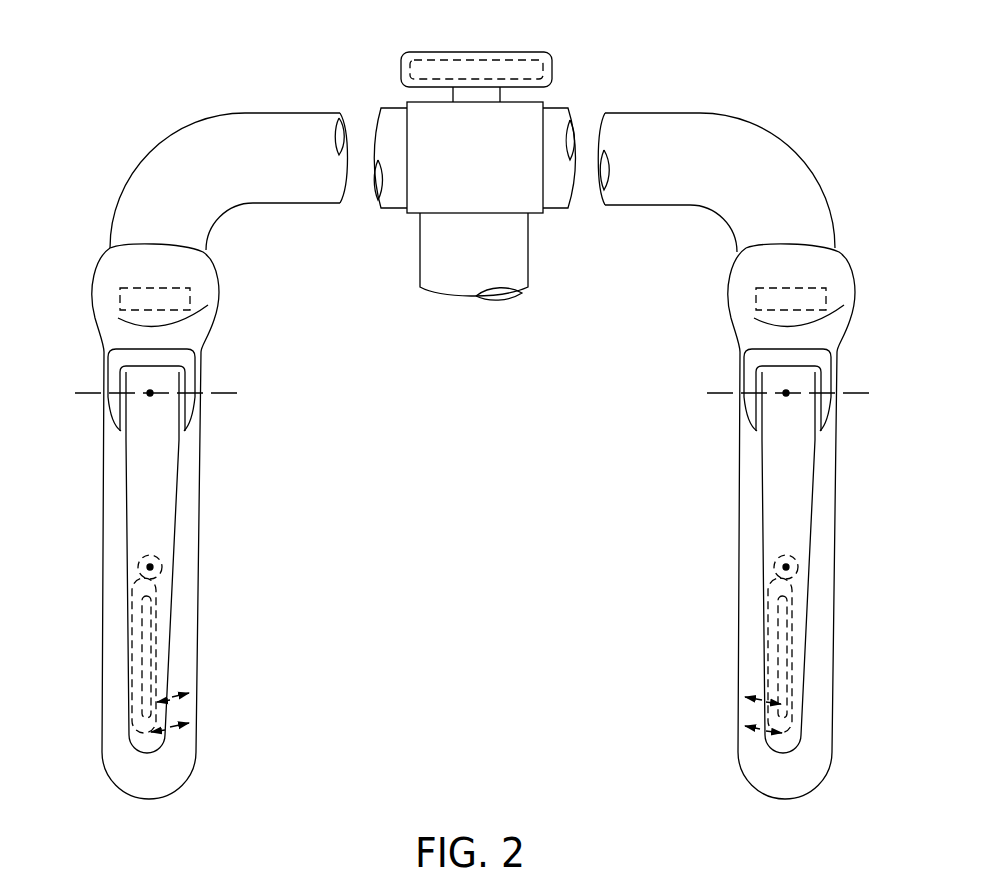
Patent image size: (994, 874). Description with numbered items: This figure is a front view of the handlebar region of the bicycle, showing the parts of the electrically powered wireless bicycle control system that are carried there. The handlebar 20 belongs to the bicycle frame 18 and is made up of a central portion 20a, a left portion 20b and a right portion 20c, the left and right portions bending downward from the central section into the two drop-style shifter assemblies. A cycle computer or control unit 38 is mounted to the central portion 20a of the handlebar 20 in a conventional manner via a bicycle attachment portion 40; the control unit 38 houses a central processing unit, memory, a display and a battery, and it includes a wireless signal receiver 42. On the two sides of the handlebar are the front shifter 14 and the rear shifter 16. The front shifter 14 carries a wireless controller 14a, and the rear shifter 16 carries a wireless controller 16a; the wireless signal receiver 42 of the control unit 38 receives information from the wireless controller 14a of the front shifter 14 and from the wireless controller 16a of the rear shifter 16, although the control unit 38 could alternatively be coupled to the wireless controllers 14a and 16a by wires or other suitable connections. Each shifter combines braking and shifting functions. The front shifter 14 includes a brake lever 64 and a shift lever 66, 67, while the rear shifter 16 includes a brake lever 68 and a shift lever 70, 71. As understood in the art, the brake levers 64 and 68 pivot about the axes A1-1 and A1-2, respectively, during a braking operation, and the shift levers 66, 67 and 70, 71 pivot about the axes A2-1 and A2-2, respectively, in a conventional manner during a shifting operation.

The handlebar 20 is at (690, 46).
The central portion 20a is at (555, 115).
The left portion 20b is at (775, 172).
The right portion 20c is at (173, 170).
The control unit 38 is at (466, 52).
The wireless signal receiver 42 is at (512, 70).
The bicycle attachment portion 40 is at (460, 95).
The bicycle frame 18 is at (487, 248).
The wireless controller 16a is at (119, 292).
The wireless controller 14a is at (827, 292).
The rear shifter 16 is at (233, 486).
The front shifter 14 is at (684, 486).
The brake lever 68 is at (143, 742).
The shift lever 70 is at (147, 647).
The shift lever 71 is at (137, 683).
The brake lever 64 is at (788, 745).
The shift lever 66 is at (783, 656).
The shift lever 67 is at (800, 686).
The axis A1-1 is at (218, 393).
The axis A1-2 is at (725, 393).
The axis A2-2 is at (154, 566).
The axis A2-1 is at (782, 566).